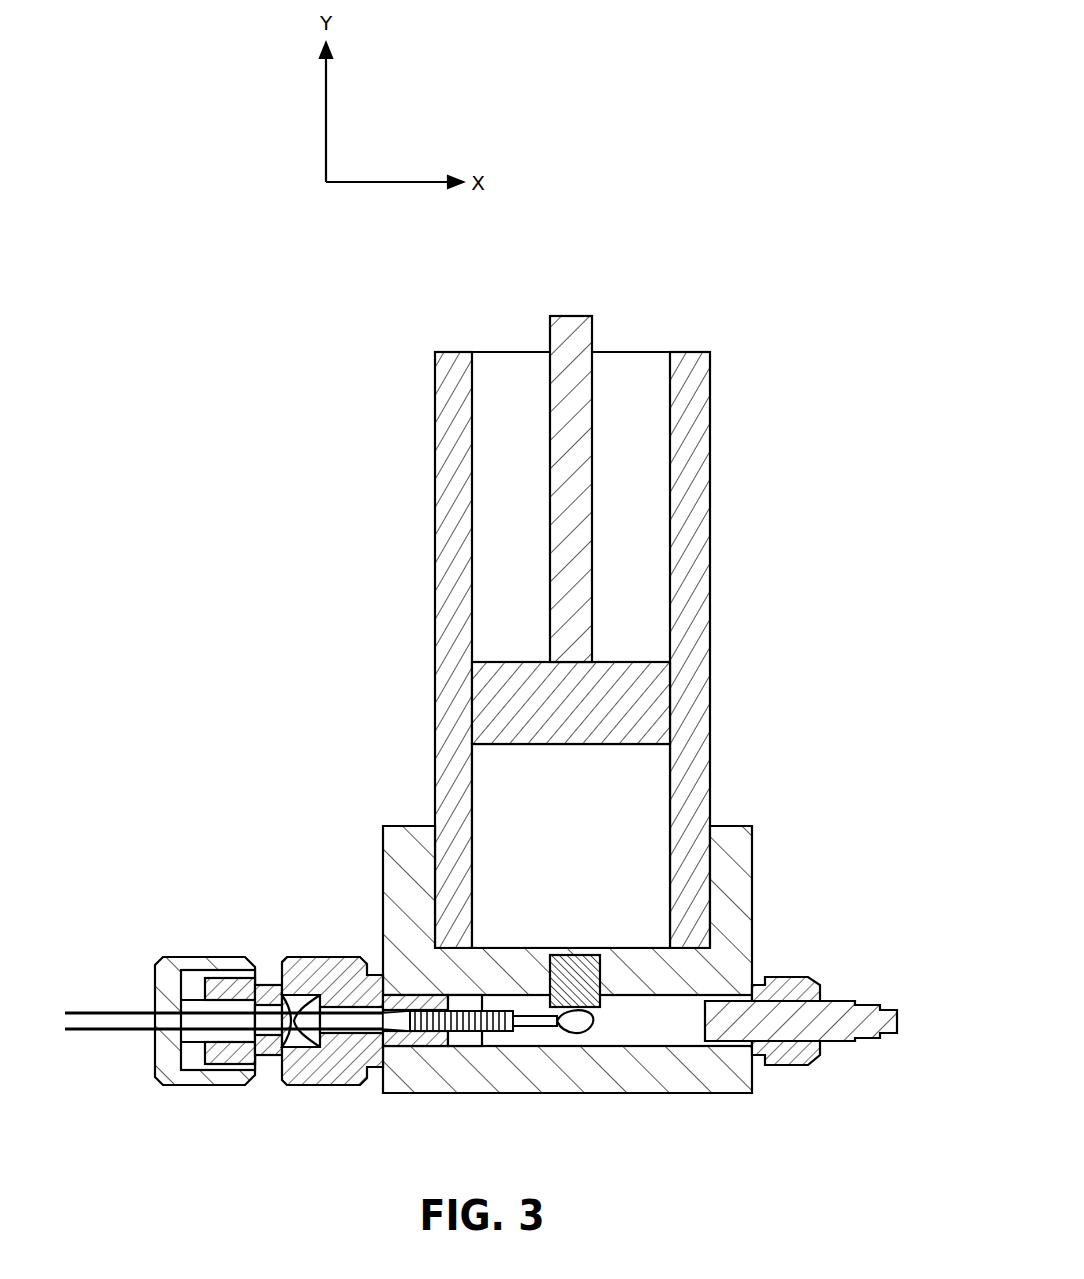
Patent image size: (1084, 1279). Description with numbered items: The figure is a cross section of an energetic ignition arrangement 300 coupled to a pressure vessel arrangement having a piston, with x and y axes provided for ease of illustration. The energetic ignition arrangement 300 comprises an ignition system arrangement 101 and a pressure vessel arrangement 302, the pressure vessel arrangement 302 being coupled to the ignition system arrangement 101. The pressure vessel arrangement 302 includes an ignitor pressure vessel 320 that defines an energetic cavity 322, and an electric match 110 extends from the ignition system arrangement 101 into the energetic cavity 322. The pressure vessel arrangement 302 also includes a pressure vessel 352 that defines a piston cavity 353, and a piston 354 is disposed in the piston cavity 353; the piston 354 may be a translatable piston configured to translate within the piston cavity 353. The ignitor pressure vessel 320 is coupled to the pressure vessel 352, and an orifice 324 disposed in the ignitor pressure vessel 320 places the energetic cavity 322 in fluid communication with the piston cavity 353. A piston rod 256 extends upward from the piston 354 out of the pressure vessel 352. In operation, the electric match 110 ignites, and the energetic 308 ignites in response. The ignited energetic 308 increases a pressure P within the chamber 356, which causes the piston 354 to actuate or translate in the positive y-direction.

The energetic ignition arrangement 300 is at (246, 398).
The pressure vessel arrangement 302 is at (663, 609).
The piston rod 256 is at (627, 410).
The pressure vessel 352 is at (688, 610).
The piston cavity 353 is at (674, 640).
The piston 354 is at (600, 707).
The chamber 356 is at (620, 780).
The ignition system arrangement 101 is at (208, 884).
The ignitor pressure vessel 320 is at (730, 930).
The orifice 324 is at (602, 955).
The electric match 110 is at (554, 1040).
The energetic 308 is at (603, 1010).
The energetic cavity 322 is at (665, 1015).